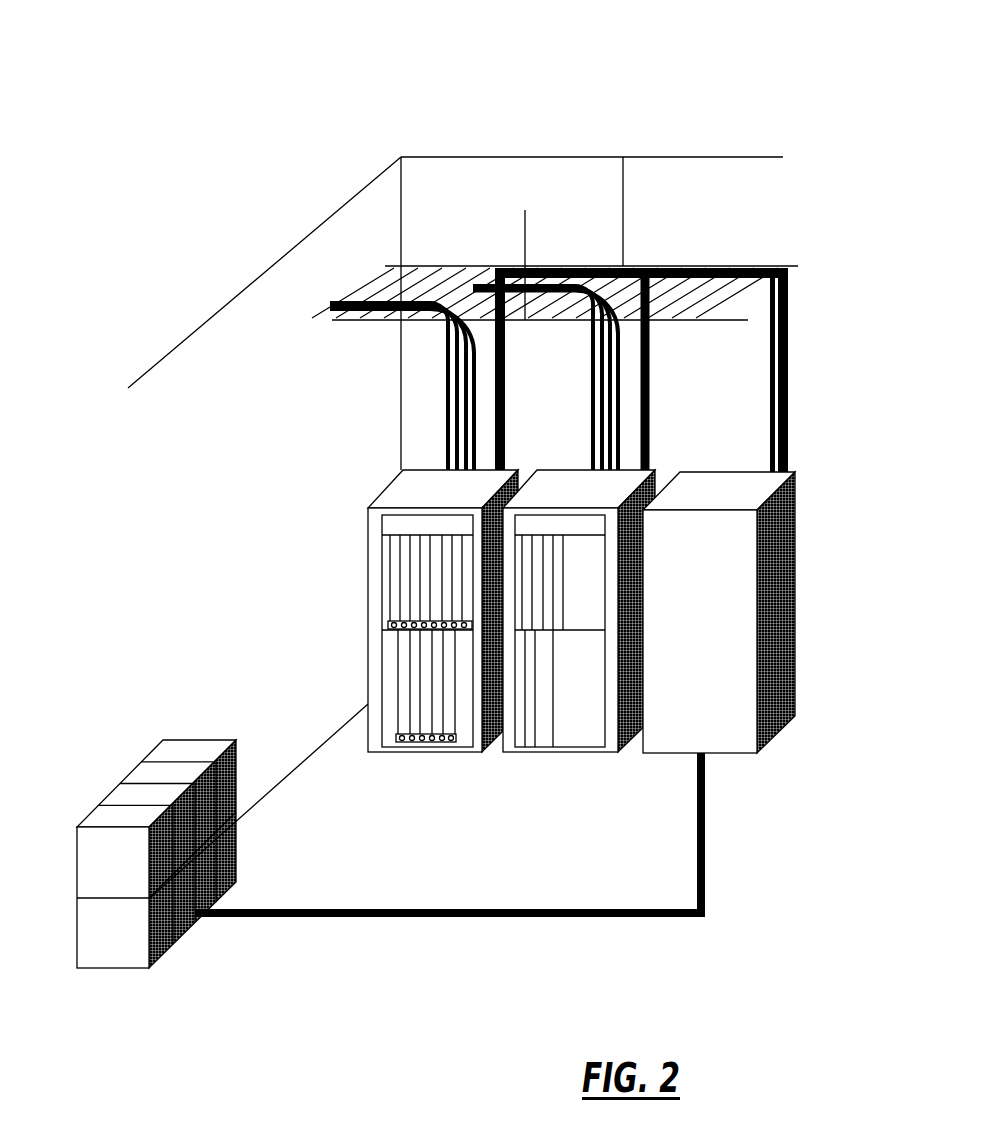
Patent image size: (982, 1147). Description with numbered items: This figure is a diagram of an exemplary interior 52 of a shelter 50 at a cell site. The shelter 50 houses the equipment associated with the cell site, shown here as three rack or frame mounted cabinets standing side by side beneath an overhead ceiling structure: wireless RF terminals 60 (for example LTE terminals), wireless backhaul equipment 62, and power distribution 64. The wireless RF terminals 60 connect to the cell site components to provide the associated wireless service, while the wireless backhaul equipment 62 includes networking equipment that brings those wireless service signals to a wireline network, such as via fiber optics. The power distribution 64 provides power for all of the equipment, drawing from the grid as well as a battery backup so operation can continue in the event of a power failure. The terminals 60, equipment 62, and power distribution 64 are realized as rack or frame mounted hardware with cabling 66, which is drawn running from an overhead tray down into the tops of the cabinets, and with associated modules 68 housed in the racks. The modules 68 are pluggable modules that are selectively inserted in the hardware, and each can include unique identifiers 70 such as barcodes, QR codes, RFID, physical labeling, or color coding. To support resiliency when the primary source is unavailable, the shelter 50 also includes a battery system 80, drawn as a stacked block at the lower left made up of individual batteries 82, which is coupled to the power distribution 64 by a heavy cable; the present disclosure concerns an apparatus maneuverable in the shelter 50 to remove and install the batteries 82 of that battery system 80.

The shelter 50 is at (465, 493).
The interior 52 is at (782, 192).
The wireless RF terminals 60 is at (444, 650).
The wireless backhaul equipment 62 is at (586, 502).
The power distribution 64 is at (720, 504).
The cabling 66 is at (667, 382).
The modules 68 is at (457, 714).
The unique identifiers 70 is at (423, 758).
The battery system 80 is at (186, 808).
The battery module 82 is at (226, 790).